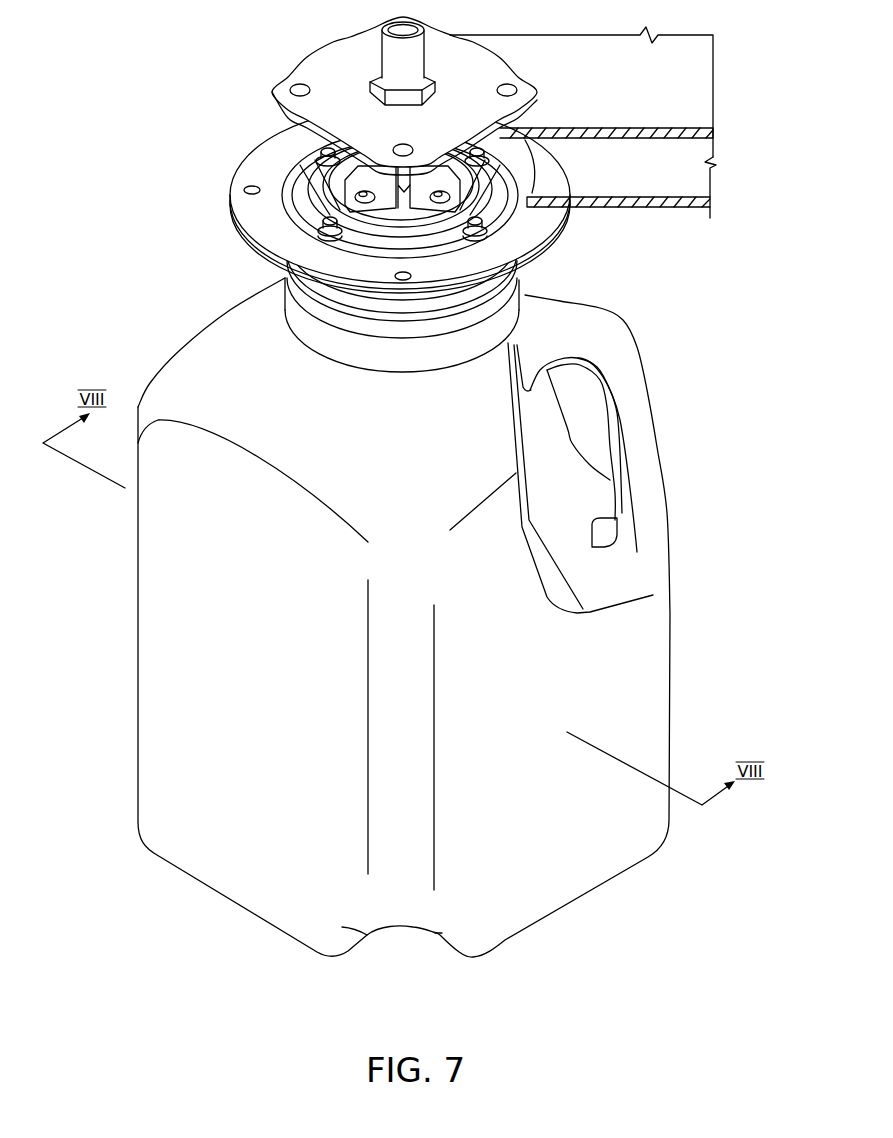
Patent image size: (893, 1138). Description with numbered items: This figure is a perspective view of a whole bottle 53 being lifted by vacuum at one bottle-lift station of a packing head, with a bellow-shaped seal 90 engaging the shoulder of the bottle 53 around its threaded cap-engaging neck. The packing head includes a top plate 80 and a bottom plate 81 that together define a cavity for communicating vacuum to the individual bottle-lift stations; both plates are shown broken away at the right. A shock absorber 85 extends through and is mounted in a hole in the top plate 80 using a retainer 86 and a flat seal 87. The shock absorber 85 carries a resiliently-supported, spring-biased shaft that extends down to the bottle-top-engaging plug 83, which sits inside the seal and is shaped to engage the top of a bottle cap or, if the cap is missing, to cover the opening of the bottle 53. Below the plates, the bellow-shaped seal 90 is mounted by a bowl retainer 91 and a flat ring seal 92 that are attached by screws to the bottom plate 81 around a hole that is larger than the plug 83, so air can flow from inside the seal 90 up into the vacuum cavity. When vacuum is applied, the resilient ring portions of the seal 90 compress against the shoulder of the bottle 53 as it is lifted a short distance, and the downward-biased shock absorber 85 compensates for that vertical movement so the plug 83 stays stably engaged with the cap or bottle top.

The bottle 53 is at (142, 553).
The top plate 80 is at (616, 90).
The bottom plate 81 is at (622, 182).
The plug 83 is at (345, 184).
The shock absorber 85 is at (397, 52).
The retainer 86 is at (316, 72).
The flat seal 87 is at (280, 134).
The bellow-shaped seal 90 is at (285, 331).
The bowl retainer 91 is at (262, 260).
The flat ring seal 92 is at (248, 152).